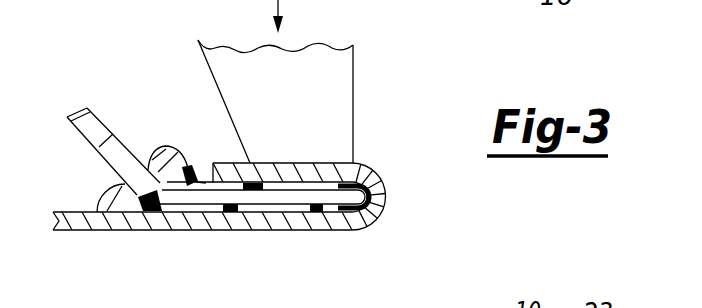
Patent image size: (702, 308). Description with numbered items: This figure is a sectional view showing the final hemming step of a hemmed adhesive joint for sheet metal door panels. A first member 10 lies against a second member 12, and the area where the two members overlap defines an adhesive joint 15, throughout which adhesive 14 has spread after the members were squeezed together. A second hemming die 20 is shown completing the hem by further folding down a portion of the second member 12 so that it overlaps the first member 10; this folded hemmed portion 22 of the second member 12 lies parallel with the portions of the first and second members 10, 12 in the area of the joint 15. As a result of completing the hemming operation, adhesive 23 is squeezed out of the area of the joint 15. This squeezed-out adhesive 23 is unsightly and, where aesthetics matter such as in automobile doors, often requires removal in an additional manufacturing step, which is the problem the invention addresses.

The first member 10 is at (87, 107).
The second member 12 is at (88, 231).
The adhesive 14 is at (288, 207).
The adhesive joint 15 is at (355, 262).
The second hemming die 20 is at (353, 112).
The hemmed portion 22 is at (286, 160).
The squeezed-out adhesive 23 is at (163, 146).